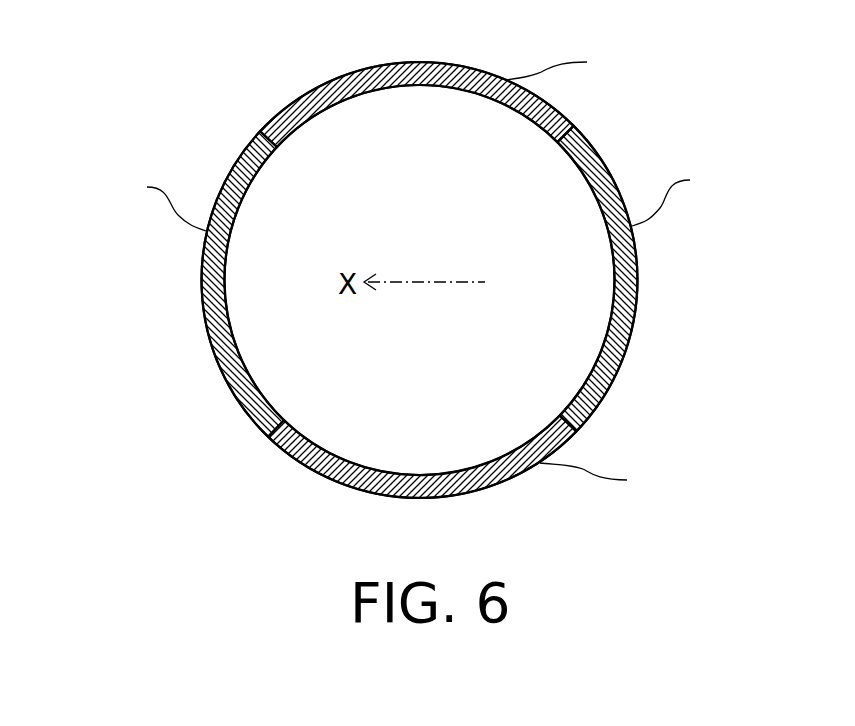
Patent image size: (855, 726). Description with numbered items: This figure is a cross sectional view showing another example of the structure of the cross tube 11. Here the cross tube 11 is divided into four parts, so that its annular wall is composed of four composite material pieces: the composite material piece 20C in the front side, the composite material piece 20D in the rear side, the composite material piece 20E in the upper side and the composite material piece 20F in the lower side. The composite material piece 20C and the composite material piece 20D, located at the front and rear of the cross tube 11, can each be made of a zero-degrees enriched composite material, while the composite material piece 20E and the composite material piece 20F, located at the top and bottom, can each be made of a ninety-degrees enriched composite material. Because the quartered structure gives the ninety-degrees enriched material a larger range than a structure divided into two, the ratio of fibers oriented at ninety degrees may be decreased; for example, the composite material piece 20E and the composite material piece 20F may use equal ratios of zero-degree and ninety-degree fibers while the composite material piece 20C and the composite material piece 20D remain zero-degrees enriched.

The cross tube 11 is at (162, 98).
The composite material piece 20C is at (203, 293).
The composite material piece 20D is at (637, 290).
The composite material piece 20E is at (347, 74).
The composite material piece 20F is at (300, 463).